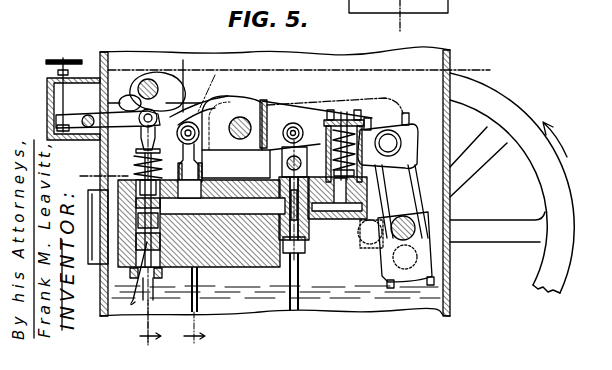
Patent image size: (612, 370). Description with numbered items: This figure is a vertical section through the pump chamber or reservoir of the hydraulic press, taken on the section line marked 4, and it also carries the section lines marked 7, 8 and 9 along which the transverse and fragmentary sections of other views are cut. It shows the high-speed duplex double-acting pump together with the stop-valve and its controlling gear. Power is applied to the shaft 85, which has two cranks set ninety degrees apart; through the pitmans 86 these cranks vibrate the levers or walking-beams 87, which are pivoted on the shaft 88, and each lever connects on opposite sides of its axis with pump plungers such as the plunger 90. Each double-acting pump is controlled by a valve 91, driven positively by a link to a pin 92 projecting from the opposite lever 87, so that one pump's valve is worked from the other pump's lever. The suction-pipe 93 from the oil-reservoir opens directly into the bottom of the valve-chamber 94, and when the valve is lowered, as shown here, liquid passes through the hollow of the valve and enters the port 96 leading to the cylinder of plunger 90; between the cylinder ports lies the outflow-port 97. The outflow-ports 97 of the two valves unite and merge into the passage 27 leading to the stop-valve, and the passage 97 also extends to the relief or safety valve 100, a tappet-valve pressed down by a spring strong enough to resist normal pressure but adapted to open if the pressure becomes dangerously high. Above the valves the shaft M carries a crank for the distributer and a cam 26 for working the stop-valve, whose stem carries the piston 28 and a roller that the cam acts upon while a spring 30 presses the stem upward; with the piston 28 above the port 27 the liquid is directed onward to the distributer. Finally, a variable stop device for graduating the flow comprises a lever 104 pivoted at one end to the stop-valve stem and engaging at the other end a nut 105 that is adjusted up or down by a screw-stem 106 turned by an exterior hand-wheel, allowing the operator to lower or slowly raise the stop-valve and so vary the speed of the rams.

The section line 4 4 is at (282, 124).
The section line 7 7 is at (150, 331).
The section line 8 8 is at (194, 337).
The section line 9 9 is at (398, 23).
The cam 26 is at (211, 80).
The port or passage 27 is at (219, 212).
The piston 28 is at (88, 193).
The spring 30 is at (138, 162).
The shaft 85 is at (415, 217).
The pitmans 86 is at (401, 201).
The lever or walking-beam 87 is at (315, 115).
The shaft 88 is at (241, 118).
The pump piston or plunger 90 is at (202, 170).
The valve 91 is at (322, 222).
The pin 92 is at (293, 123).
The suction-pipe 93 is at (312, 296).
The valve-chamber 94 is at (306, 248).
The port 96 is at (253, 190).
The outflow-port 97 is at (268, 214).
The relief or safety valve 100 is at (353, 120).
The lever 104 is at (100, 116).
The nut 105 is at (53, 114).
The screw-stem 106 is at (63, 58).
The shaft M is at (143, 86).